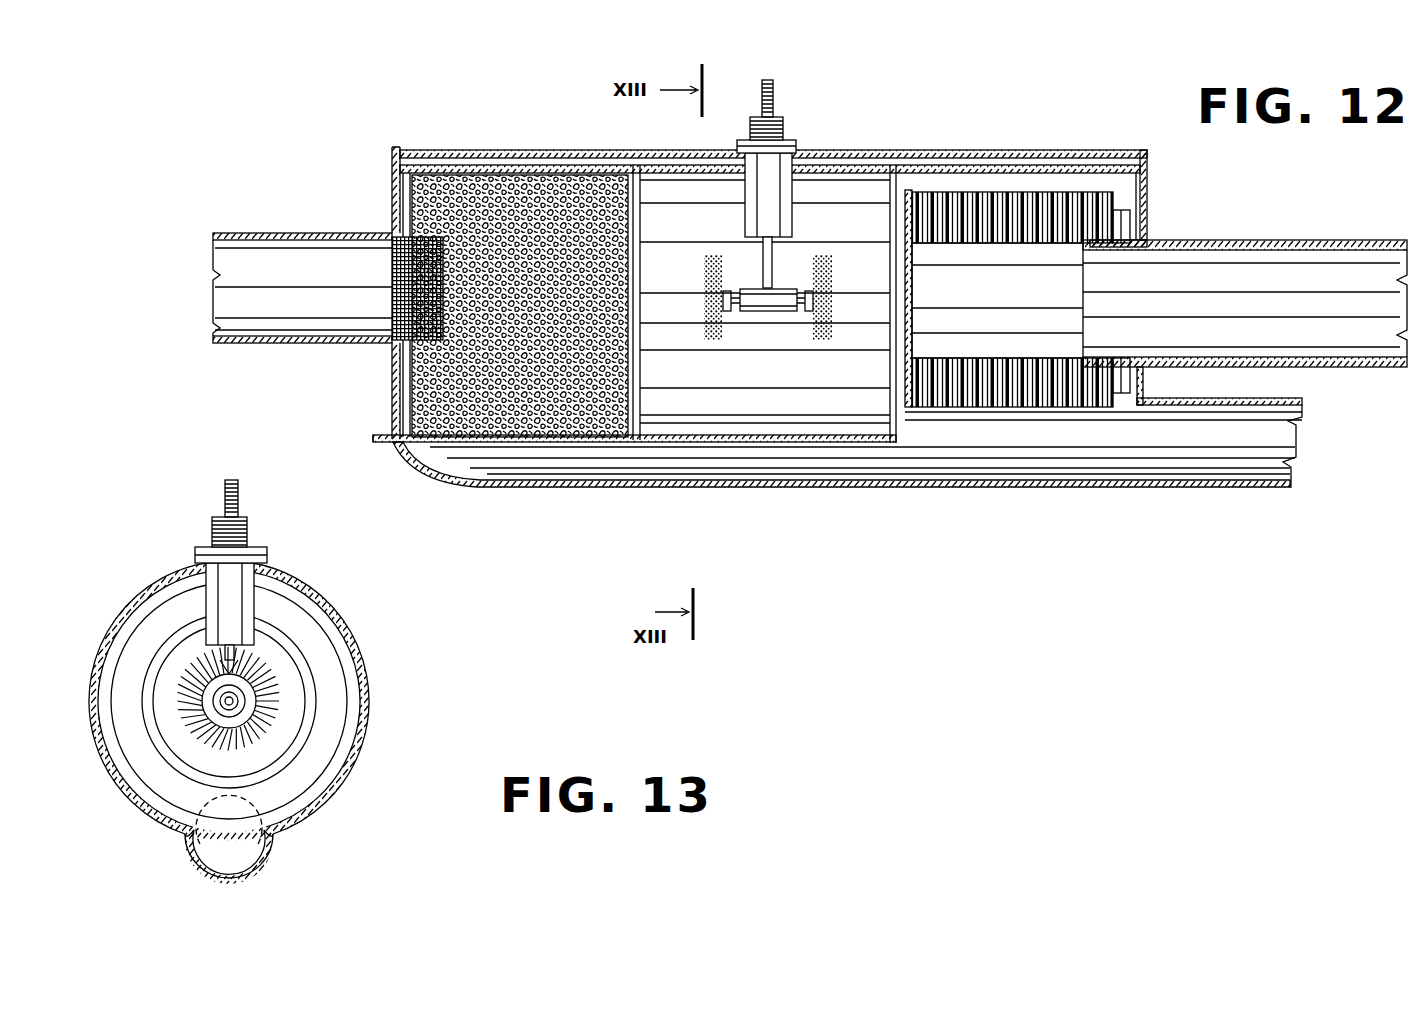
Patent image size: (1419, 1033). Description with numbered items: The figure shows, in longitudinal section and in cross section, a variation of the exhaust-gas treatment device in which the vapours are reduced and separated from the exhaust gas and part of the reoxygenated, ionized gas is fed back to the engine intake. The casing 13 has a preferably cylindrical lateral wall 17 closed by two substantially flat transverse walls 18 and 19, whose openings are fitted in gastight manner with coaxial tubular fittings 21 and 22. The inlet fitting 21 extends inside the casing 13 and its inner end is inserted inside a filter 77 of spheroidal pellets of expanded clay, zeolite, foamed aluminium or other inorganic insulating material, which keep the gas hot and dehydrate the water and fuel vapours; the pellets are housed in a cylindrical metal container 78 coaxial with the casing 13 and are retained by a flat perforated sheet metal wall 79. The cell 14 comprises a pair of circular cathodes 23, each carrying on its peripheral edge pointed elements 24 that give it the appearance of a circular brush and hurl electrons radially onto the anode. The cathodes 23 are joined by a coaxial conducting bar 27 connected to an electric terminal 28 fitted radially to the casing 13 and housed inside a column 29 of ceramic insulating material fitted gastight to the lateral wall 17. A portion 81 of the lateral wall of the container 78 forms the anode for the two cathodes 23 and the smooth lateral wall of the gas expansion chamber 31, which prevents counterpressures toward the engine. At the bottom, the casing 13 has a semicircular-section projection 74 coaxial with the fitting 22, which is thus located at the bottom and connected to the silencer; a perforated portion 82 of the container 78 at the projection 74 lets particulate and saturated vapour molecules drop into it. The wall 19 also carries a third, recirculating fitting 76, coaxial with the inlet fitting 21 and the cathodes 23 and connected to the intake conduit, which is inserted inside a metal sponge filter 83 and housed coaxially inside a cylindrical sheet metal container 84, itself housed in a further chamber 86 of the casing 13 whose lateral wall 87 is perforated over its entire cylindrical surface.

In FIG. 12, the casing 13 is at (891, 144).
In FIG. 13, the casing 13 is at (365, 614).
In FIG. 12, the cell 14 is at (799, 358).
In FIG. 12, the lateral wall 17 is at (593, 150).
In FIG. 13, the lateral wall 17 is at (352, 640).
In FIG. 12, the transverse wall 18 is at (390, 388).
In FIG. 12, the transverse wall 19 is at (1143, 233).
In FIG. 13, the transverse wall 19 is at (120, 630).
In FIG. 12, the tubular fitting 21 is at (262, 345).
In FIG. 12, the tubular fitting 22 is at (1238, 490).
In FIG. 13, the tubular fitting 22 is at (275, 850).
In FIG. 12, the cathode 23 is at (833, 327).
In FIG. 13, the cathode 23 is at (250, 720).
In FIG. 12, the pointed elements 24 is at (705, 267).
In FIG. 13, the pointed elements 24 is at (275, 675).
In FIG. 12, the conducting bar 27 is at (773, 302).
In FIG. 12, the electric terminal 28 is at (775, 270).
In FIG. 13, the electric terminal 28 is at (238, 498).
In FIG. 12, the column 29 is at (792, 200).
In FIG. 13, the column 29 is at (218, 615).
In FIG. 12, the gas expansion chamber 31 is at (882, 420).
In FIG. 12, the projection 74 is at (613, 482).
In FIG. 13, the projection 74 is at (185, 850).
In FIG. 12, the third fitting 76 is at (1263, 247).
In FIG. 12, the filter 77 is at (467, 193).
In FIG. 12, the cylindrical metal container 78 is at (407, 207).
In FIG. 13, the cylindrical metal container 78 is at (352, 705).
In FIG. 12, the perforated sheet metal wall 79 is at (647, 443).
In FIG. 12, the anode portion 81 is at (690, 163).
In FIG. 12, the perforated portion 82 is at (550, 440).
In FIG. 13, the perforated portion 82 is at (240, 830).
In FIG. 12, the filter 83 is at (1098, 192).
In FIG. 12, the cylindrical sheet metal container 84 is at (902, 407).
In FIG. 13, the cylindrical sheet metal container 84 is at (163, 733).
In FIG. 12, the chamber 86 is at (1030, 180).
In FIG. 13, the chamber 86 is at (275, 605).
In FIG. 12, the lateral wall 87 is at (1040, 405).